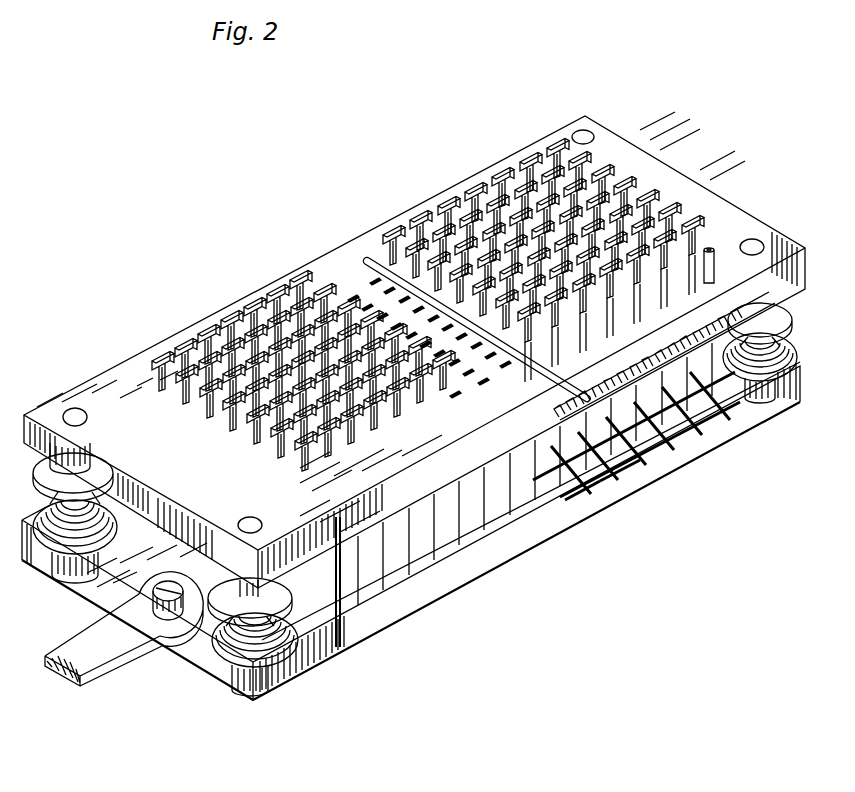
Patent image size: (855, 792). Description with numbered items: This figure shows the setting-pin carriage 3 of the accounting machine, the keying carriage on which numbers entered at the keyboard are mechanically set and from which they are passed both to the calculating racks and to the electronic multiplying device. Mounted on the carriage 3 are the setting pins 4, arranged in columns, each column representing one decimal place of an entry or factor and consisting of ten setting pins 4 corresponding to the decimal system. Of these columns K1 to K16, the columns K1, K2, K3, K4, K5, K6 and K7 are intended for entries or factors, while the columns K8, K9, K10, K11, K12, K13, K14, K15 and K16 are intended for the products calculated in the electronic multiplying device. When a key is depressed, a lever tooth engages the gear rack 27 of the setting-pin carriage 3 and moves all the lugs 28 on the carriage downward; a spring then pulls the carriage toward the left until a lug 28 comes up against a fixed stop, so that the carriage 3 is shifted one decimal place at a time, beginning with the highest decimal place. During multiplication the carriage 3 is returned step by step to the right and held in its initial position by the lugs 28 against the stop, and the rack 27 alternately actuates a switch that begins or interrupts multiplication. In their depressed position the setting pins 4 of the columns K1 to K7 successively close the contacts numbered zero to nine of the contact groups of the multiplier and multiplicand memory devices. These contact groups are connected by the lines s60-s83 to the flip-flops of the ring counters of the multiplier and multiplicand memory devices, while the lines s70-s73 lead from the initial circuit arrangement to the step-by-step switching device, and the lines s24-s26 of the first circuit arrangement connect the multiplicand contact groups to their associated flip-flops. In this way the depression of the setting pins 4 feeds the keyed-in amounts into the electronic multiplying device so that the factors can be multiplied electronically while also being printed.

The setting-pin carriage 3 is at (628, 173).
The setting pins 4 is at (670, 217).
The lugs 28 is at (709, 248).
The gear rack 27 is at (573, 378).
The setting-pin column K1 is at (547, 148).
The setting-pin column K2 is at (520, 162).
The setting-pin column K3 is at (493, 175).
The setting-pin column K4 is at (468, 190).
The setting-pin column K5 is at (441, 203).
The setting-pin column K6 is at (412, 218).
The setting-pin column K7 is at (384, 237).
The setting-pin column K8 is at (368, 285).
The setting-pin column K9 is at (342, 300).
The setting-pin column K10 is at (458, 396).
The setting-pin column K11 is at (296, 284).
The setting-pin column K12 is at (262, 305).
The setting-pin column K13 is at (236, 319).
The setting-pin column K14 is at (210, 332).
The setting-pin column K15 is at (186, 347).
The setting-pin column K16 is at (163, 360).
The connecting lines s60-s83 is at (660, 442).
The connecting lines s70-s73 is at (568, 499).
The connecting lines s24-s26 is at (672, 527).